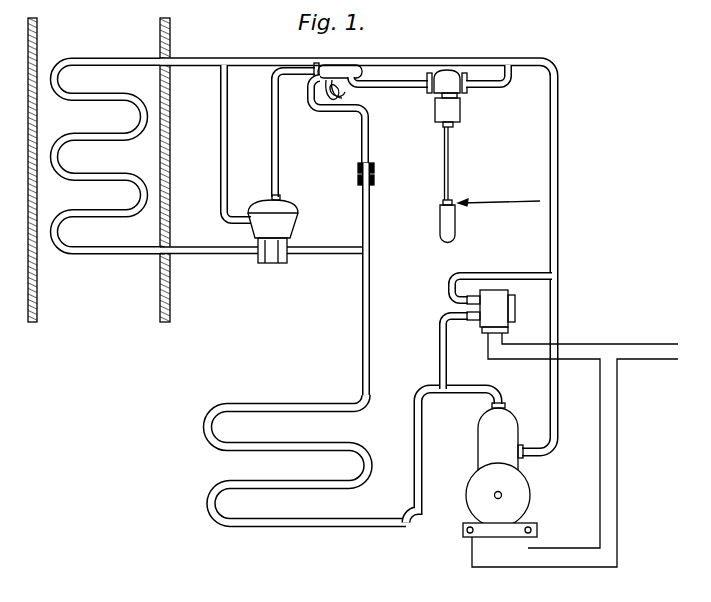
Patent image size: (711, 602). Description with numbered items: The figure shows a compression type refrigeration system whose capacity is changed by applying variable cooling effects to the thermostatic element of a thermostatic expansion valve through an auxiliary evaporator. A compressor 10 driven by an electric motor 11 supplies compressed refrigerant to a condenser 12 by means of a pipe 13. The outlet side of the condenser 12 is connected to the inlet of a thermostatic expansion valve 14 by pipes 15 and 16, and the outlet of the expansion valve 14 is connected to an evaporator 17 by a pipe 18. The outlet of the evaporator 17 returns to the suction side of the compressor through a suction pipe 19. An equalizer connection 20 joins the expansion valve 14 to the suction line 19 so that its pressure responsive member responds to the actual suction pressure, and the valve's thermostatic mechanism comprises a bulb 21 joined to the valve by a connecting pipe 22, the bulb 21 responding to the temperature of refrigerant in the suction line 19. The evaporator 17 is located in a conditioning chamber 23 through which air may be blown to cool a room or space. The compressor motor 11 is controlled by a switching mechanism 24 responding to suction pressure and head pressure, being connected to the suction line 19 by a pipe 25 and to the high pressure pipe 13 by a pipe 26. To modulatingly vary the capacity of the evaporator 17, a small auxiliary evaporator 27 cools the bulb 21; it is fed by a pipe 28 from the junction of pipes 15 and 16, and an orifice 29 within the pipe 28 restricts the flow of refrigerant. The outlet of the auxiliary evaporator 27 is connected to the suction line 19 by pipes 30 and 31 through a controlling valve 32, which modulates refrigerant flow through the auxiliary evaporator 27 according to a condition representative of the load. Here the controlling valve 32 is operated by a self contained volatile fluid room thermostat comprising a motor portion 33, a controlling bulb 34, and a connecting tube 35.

The compressor 10 is at (487, 438).
The electric motor 11 is at (476, 498).
The condenser 12 is at (333, 452).
The pipe 13 is at (413, 421).
The thermostatic expansion valve 14 is at (272, 257).
The pipe 15 is at (371, 302).
The pipe 16 is at (325, 254).
The evaporator 17 is at (130, 100).
The pipe 18 is at (216, 255).
The suction pipe 19 is at (265, 58).
The equalizer connection 20 is at (221, 158).
The bulb 21 is at (347, 70).
The connecting pipe 22 is at (272, 146).
The conditioning chamber 23 is at (99, 170).
The switching mechanism 24 is at (497, 308).
The pipe 25 is at (503, 272).
The pipe 26 is at (439, 346).
The auxiliary evaporator 27 is at (326, 92).
The pipe 28 is at (361, 145).
The orifice 29 is at (374, 170).
The pipe 30 is at (404, 89).
The pipe 31 is at (509, 86).
The controlling valve 32 is at (450, 78).
The motor portion 33 is at (461, 113).
The controlling bulb 34 is at (456, 228).
The connecting tube 35 is at (443, 157).